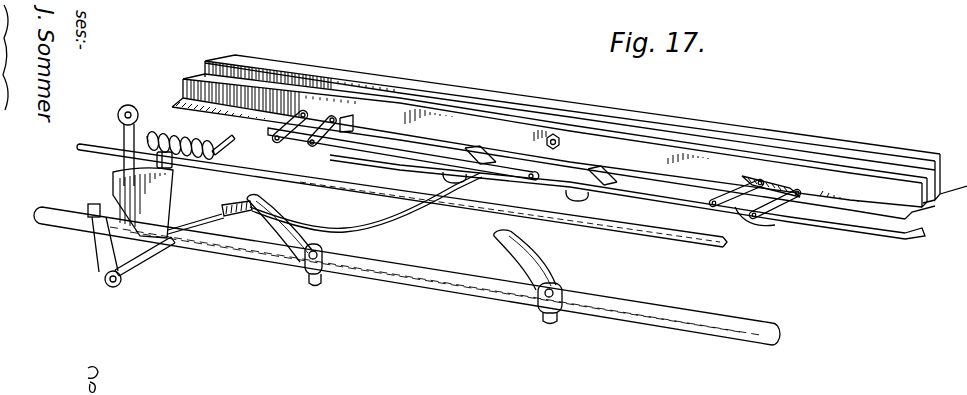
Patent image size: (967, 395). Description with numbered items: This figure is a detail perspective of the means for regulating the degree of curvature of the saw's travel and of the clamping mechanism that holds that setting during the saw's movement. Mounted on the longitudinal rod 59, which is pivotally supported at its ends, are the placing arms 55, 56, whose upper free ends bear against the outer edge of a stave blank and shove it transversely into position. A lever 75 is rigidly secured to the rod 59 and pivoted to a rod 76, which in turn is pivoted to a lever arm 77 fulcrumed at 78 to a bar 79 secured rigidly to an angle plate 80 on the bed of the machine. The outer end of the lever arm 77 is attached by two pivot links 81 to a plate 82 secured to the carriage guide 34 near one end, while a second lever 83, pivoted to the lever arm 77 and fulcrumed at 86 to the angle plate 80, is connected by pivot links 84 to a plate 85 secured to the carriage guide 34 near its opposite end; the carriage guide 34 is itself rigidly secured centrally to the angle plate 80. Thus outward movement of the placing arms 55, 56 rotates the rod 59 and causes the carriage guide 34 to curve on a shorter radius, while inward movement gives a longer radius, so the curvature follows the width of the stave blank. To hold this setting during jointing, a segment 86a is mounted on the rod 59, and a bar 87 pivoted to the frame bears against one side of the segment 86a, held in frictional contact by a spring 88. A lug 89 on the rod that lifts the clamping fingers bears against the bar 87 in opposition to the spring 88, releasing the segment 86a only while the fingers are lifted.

The carriage guide 34 is at (569, 158).
The placing arm 55 is at (282, 234).
The placing arm 56 is at (516, 256).
The longitudinal rod 59 is at (463, 286).
The lever 75 is at (96, 253).
The rod 76 is at (139, 262).
The lever arm 77 is at (350, 226).
The fulcrum 78 is at (584, 186).
The bar 79 is at (612, 173).
The angle plate 80 is at (690, 124).
The pivot links 81 is at (781, 205).
The plate 82 is at (876, 206).
The second lever 83 is at (361, 154).
The pivot links 84 is at (302, 146).
The plate 85 is at (258, 116).
The fulcrum 86 is at (456, 166).
The segment 86a is at (166, 196).
The bar 87 is at (122, 133).
The spring 88 is at (205, 138).
The lug 89 is at (150, 161).